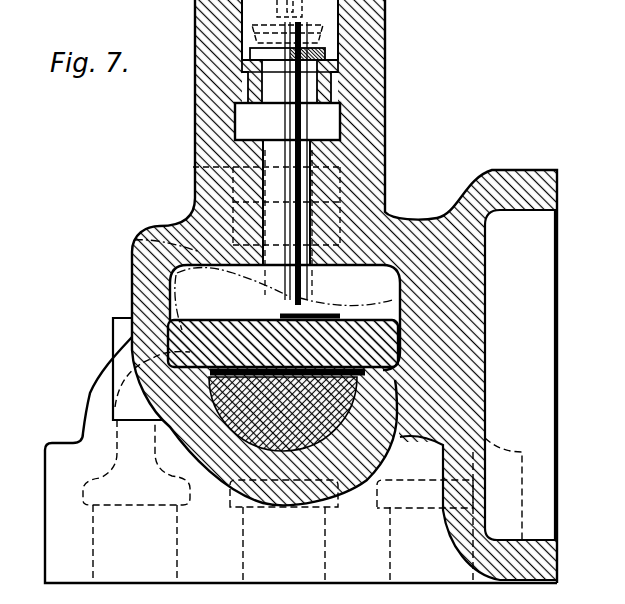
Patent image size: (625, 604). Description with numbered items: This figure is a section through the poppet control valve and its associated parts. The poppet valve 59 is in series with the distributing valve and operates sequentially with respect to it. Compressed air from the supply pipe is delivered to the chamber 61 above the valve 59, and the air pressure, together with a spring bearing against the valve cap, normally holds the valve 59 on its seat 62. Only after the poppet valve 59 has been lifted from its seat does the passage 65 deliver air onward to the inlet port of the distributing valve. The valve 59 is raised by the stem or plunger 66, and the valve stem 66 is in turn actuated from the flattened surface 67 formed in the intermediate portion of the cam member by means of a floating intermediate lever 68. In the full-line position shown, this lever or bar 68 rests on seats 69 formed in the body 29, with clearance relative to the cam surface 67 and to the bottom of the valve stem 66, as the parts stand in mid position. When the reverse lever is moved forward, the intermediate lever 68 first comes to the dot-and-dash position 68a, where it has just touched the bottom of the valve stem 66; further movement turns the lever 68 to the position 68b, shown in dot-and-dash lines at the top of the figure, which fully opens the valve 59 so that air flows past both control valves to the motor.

The body 29 is at (471, 181).
The poppet valve 59 is at (325, 52).
The chamber 61 is at (305, 13).
The seat 62 is at (248, 73).
The passage 65 is at (287, 121).
The valve stem or plunger 66 is at (266, 169).
The flattened surface 67 is at (263, 365).
The floating intermediate lever 68 is at (383, 318).
The intermediate lever position 68a is at (214, 314).
The intermediate lever position 68b is at (134, 240).
The seats 69 is at (172, 366).